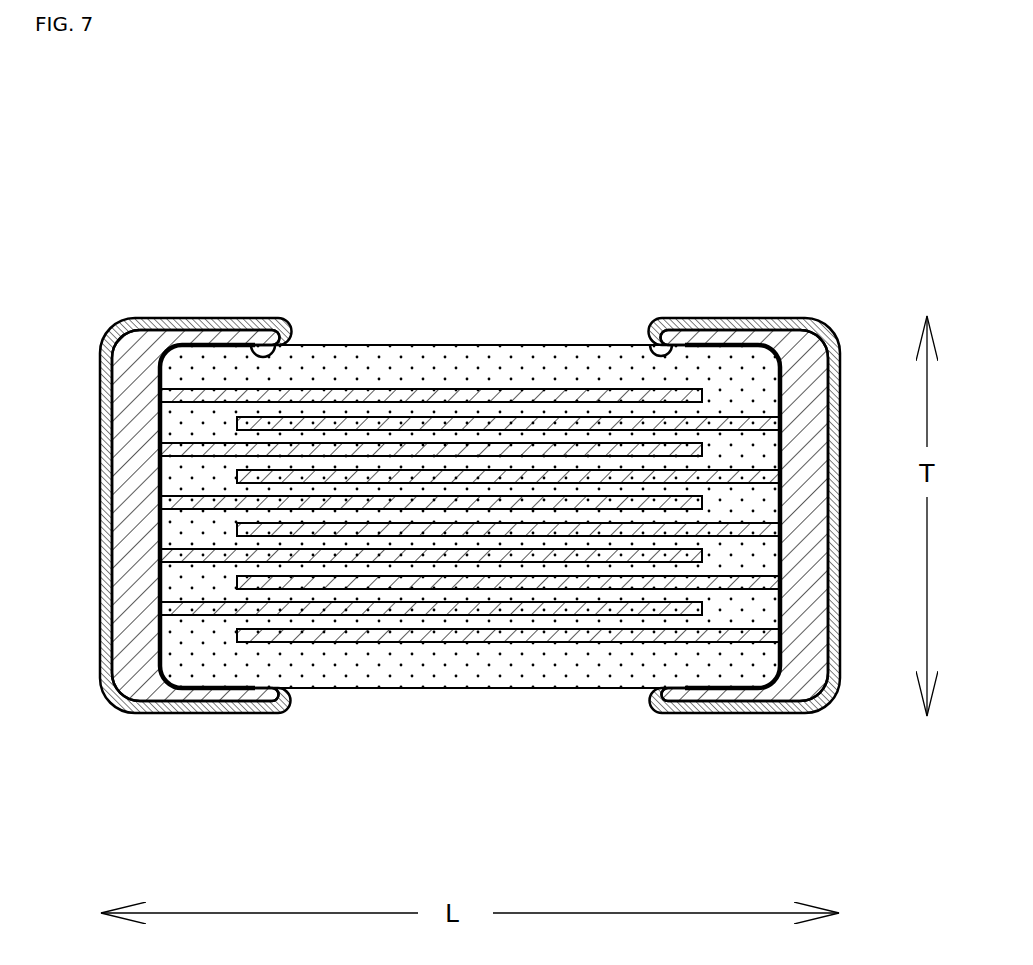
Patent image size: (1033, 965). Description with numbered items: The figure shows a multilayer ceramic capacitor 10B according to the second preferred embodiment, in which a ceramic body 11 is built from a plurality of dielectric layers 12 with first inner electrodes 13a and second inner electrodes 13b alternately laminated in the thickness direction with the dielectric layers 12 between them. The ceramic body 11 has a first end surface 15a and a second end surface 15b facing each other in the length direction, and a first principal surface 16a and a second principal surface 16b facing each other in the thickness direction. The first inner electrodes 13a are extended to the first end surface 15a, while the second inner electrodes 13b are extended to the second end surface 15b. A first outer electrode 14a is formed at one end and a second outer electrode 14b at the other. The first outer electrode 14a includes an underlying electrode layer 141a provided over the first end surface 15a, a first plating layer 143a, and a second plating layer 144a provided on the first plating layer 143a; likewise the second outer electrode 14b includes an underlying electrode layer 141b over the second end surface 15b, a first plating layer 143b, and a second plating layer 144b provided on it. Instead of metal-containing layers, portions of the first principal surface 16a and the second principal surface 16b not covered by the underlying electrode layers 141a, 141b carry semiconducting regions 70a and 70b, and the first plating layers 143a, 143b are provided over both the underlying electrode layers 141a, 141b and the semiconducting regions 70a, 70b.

The multilayer ceramic capacitor 10B is at (372, 147).
The ceramic body 11 is at (455, 345).
The dielectric layers 12 is at (378, 440).
The first inner electrodes 13a is at (590, 443).
The second inner electrodes 13b is at (497, 589).
The first outer electrode 14a is at (183, 415).
The second outer electrode 14b is at (714, 420).
The first end surface 15a is at (158, 483).
The second end surface 15b is at (782, 507).
The first principal surface 16a is at (400, 345).
The second principal surface 16b is at (372, 688).
The semiconducting region 70a is at (281, 285).
The semiconducting region 70b is at (630, 302).
The underlying electrode layer 141a is at (143, 336).
The first plating layer 143a is at (232, 344).
The second plating layer 144a is at (188, 332).
The underlying electrode layer 141b is at (795, 330).
The first plating layer 143b is at (703, 341).
The second plating layer 144b is at (733, 331).